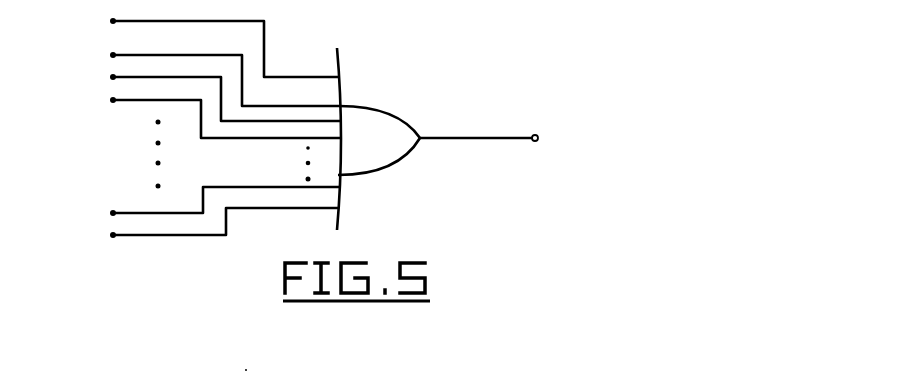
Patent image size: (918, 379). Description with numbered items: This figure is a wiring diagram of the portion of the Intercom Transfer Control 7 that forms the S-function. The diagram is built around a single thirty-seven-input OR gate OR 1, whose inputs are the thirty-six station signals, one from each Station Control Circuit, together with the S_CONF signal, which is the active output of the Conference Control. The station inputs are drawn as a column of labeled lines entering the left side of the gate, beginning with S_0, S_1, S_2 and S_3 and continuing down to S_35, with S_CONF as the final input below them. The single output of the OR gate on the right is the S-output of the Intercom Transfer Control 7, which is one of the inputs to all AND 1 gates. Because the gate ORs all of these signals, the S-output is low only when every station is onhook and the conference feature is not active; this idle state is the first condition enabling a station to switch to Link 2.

The Intercom Transfer Control 7 is at (435, 190).
The OR gate OR 1 is at (378, 139).
The S_0 input signal 0 is at (206, 43).
The S_2 input signal 2 is at (205, 95).
The S_3 input signal 3 is at (205, 115).
The S_35 input signal 35 is at (201, 204).